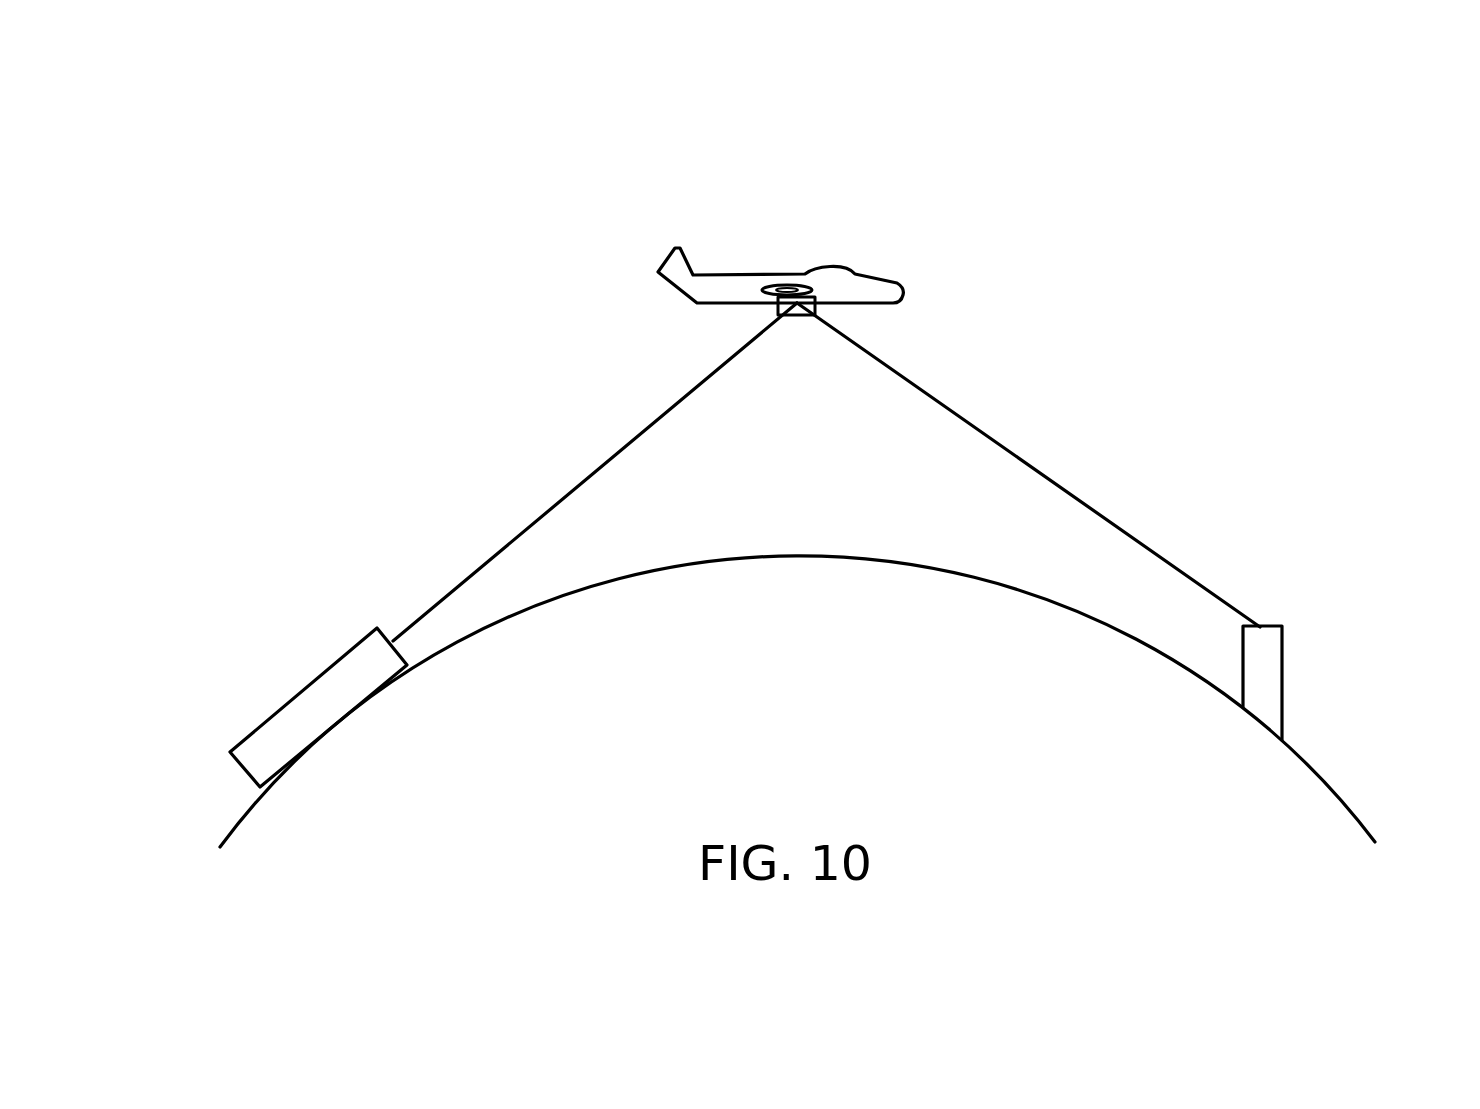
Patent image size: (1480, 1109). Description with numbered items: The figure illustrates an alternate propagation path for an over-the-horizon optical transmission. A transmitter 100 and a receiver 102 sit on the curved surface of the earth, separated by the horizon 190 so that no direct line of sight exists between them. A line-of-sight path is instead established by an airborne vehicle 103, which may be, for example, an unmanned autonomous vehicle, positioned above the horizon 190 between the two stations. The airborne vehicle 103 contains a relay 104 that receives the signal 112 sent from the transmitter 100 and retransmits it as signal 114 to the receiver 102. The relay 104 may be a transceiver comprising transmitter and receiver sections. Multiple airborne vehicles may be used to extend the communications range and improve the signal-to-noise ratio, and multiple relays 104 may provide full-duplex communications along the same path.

The transmitter 100 is at (335, 661).
The receiver 102 is at (1283, 658).
The airborne vehicle 103 is at (747, 275).
The relay 104 is at (797, 314).
The signal 112 is at (578, 484).
The signal 114 is at (1027, 462).
The horizon 190 is at (793, 557).